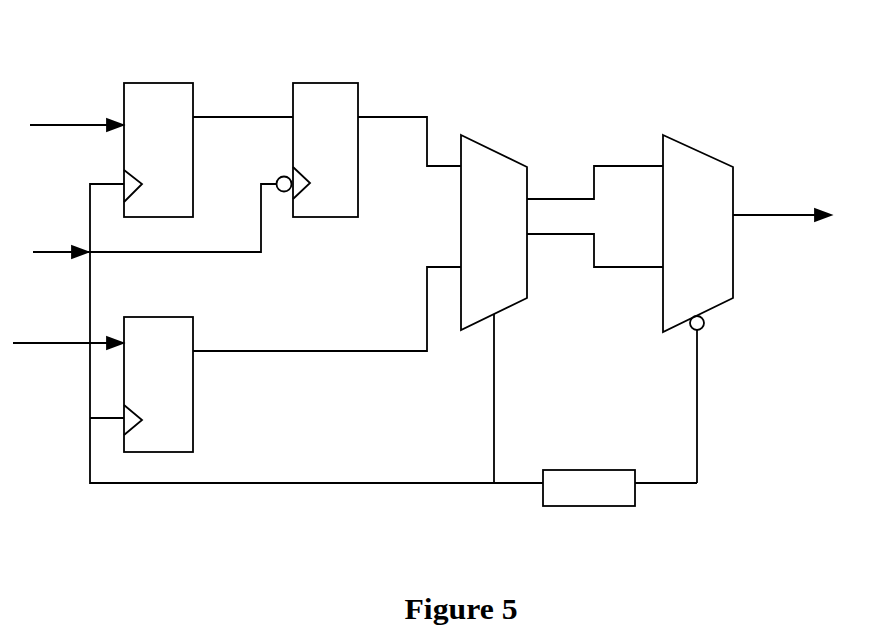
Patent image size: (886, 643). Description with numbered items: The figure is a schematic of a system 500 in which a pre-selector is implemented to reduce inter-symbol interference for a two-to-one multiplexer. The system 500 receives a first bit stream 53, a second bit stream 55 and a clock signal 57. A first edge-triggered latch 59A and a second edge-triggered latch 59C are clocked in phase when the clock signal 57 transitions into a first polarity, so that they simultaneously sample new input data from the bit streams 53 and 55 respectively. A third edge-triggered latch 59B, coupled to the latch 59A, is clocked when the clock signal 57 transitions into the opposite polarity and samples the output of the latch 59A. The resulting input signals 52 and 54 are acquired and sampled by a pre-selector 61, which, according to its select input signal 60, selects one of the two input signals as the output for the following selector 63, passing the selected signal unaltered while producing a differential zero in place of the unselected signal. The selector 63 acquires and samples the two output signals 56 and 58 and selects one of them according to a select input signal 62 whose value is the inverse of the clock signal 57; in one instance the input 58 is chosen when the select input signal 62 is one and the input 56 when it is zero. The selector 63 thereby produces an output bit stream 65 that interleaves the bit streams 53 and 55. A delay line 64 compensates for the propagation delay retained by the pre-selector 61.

The system 500 is at (422, 256).
The first bit stream 53 is at (76, 114).
The clock signal 57 is at (288, 333).
The second bit stream 55 is at (68, 333).
The first edge-triggered latch 59A is at (158, 150).
The third edge-triggered latch 59B is at (318, 150).
The second edge-triggered latch 59C is at (158, 384).
The input signal 52 is at (409, 157).
The input signal 54 is at (327, 298).
The pre-selector 61 is at (494, 232).
The select input signal 60 is at (510, 398).
The output signal 56 is at (595, 167).
The output signal 58 is at (595, 269).
The selector 63 is at (698, 233).
The output bit stream 65 is at (782, 204).
The select input signal 62 is at (711, 398).
The delay line 64 is at (620, 488).